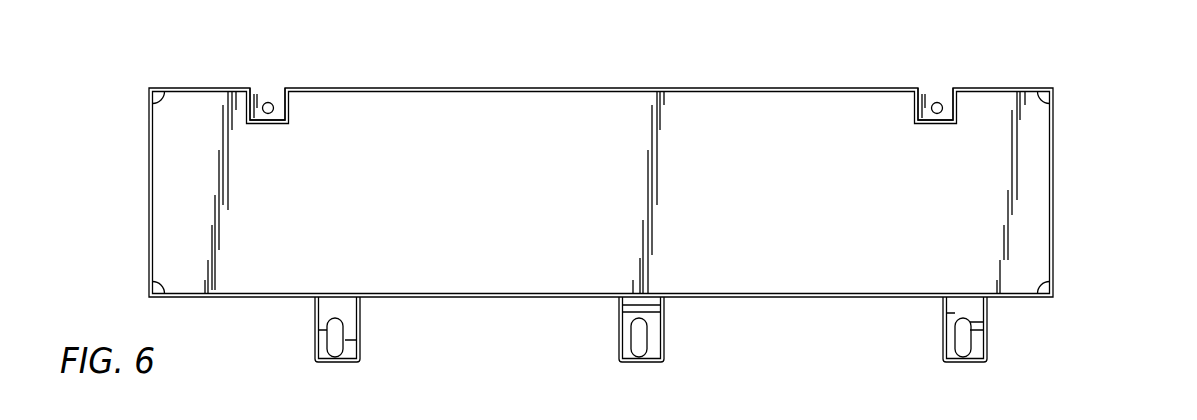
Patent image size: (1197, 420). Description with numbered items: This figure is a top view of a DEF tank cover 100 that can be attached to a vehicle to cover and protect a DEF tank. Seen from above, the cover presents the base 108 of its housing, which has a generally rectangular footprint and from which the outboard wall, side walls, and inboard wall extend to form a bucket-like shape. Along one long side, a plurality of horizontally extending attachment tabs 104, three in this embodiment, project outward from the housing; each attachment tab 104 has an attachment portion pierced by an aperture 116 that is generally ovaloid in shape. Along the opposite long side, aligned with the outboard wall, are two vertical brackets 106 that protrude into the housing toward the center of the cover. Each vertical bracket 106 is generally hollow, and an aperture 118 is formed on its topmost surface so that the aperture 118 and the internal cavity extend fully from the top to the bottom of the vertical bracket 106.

The DEF tank cover 100 is at (665, 226).
The attachment tab 104 is at (348, 364).
The vertical bracket 106 is at (288, 108).
The base 108 is at (490, 105).
The aperture 116 is at (335, 340).
The aperture 118 is at (264, 103).